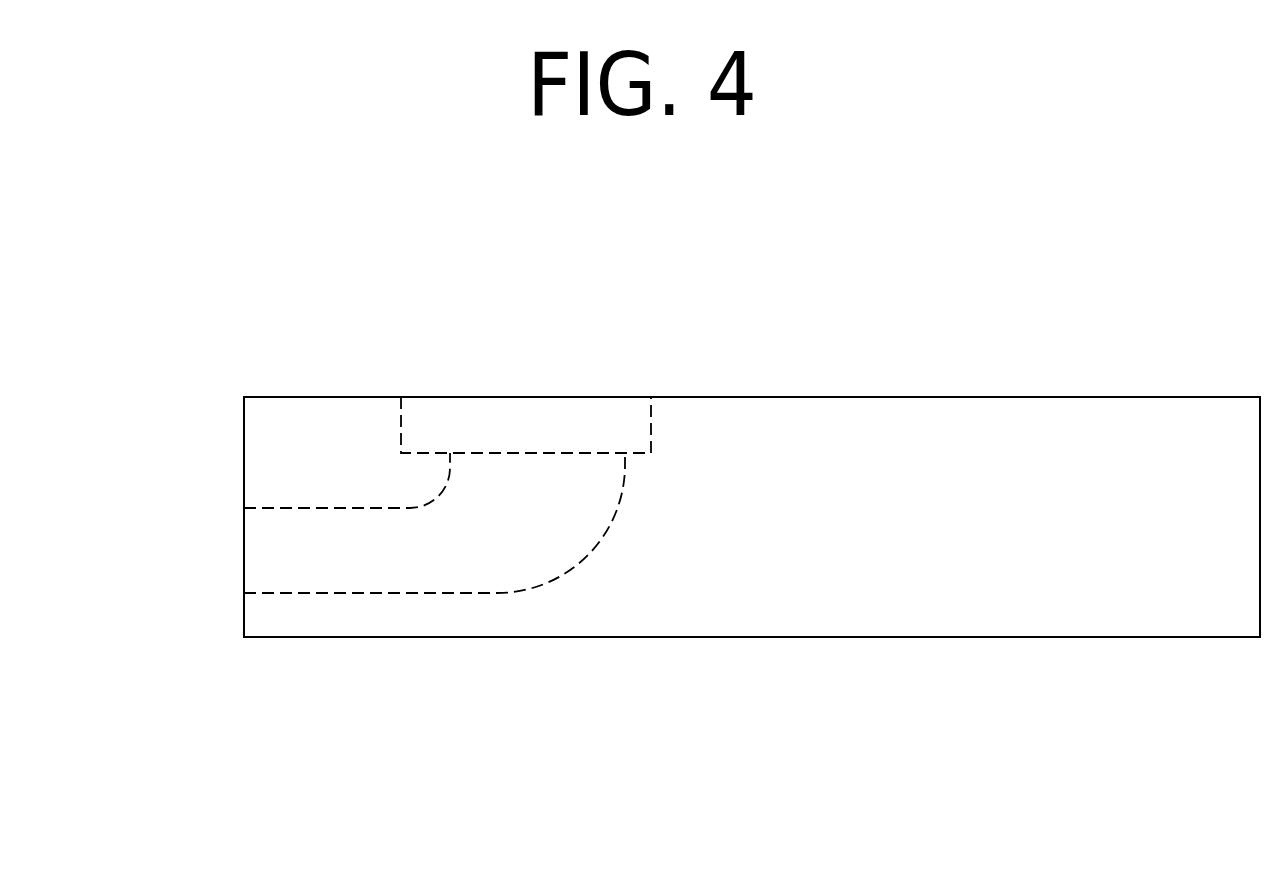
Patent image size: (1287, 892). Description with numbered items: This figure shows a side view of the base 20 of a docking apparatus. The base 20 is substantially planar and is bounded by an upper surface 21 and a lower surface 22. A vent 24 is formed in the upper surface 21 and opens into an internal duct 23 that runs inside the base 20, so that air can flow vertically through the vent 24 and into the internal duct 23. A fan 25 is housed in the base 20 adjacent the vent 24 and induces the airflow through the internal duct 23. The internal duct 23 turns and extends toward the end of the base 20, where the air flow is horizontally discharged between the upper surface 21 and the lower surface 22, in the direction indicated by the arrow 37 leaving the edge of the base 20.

The base 20 is at (220, 405).
The upper surface 21 is at (802, 397).
The lower surface 22 is at (805, 637).
The internal duct 23 is at (478, 550).
The vent 24 is at (460, 397).
The fan 25 is at (572, 428).
The arrow 37 is at (244, 553).